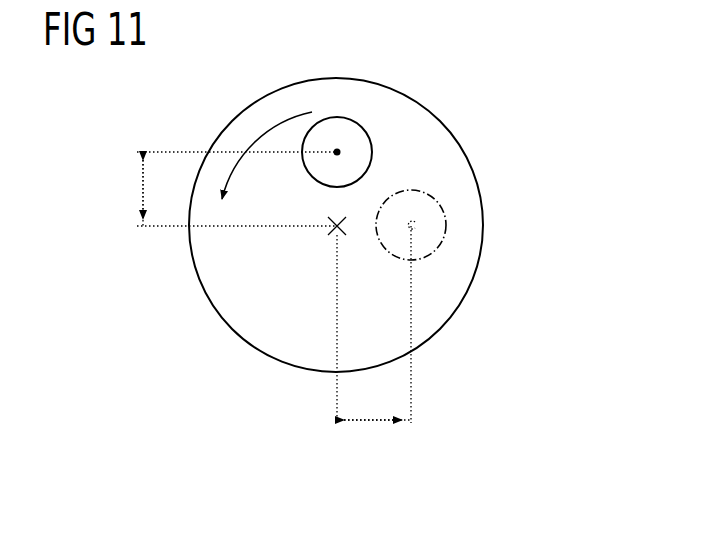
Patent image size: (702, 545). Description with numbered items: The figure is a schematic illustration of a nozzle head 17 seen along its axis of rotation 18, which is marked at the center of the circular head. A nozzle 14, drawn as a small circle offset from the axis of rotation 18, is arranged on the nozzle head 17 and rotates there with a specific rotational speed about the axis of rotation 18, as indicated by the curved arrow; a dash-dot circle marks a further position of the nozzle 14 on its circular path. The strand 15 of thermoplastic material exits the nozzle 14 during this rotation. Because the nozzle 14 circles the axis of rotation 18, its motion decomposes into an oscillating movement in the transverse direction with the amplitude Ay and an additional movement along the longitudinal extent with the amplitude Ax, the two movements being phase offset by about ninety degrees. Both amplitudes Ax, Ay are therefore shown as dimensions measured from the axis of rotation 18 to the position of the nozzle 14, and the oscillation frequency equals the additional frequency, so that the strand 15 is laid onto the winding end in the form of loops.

The nozzle 14 is at (365, 128).
The strand 15 is at (338, 150).
The nozzle head 17 is at (478, 188).
The axis of rotation 18 is at (338, 243).
The amplitude of the additional movement Ax is at (143, 190).
The amplitude in the transverse direction Ay is at (371, 425).